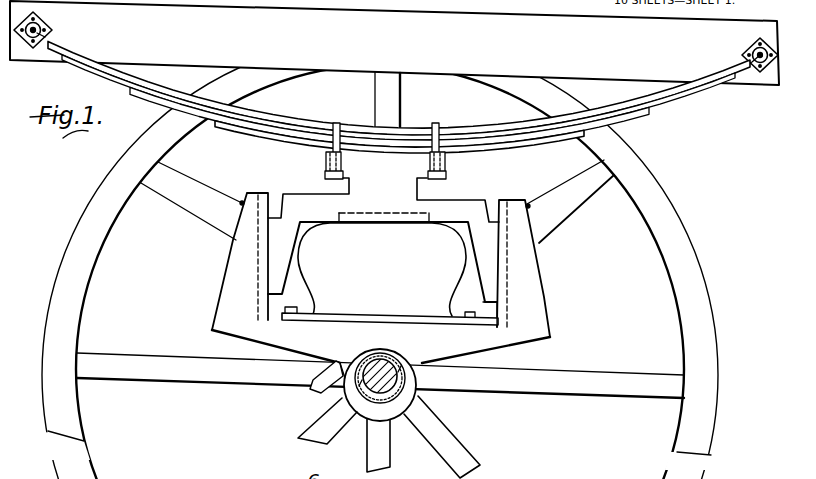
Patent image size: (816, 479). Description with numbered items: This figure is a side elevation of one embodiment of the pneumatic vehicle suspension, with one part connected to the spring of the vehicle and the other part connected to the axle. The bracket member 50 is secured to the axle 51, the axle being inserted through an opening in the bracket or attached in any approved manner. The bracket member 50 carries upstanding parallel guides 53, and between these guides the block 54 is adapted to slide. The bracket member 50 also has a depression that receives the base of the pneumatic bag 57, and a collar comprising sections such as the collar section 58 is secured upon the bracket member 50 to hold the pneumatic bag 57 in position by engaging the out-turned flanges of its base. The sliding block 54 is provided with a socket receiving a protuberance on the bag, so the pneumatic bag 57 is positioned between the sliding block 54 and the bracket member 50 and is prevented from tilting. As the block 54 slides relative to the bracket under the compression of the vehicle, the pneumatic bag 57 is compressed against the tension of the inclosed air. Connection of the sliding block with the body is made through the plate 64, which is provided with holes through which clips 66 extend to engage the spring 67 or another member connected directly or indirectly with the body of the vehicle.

The bracket member 50 is at (527, 298).
The axle 51 is at (384, 366).
The upstanding parallel guides 53 is at (500, 318).
The block 54 is at (474, 201).
The pneumatic bag 57 is at (382, 269).
The collar section 58 is at (354, 321).
The plate 64 is at (383, 187).
The clips 66 is at (433, 127).
The spring 67 is at (182, 90).